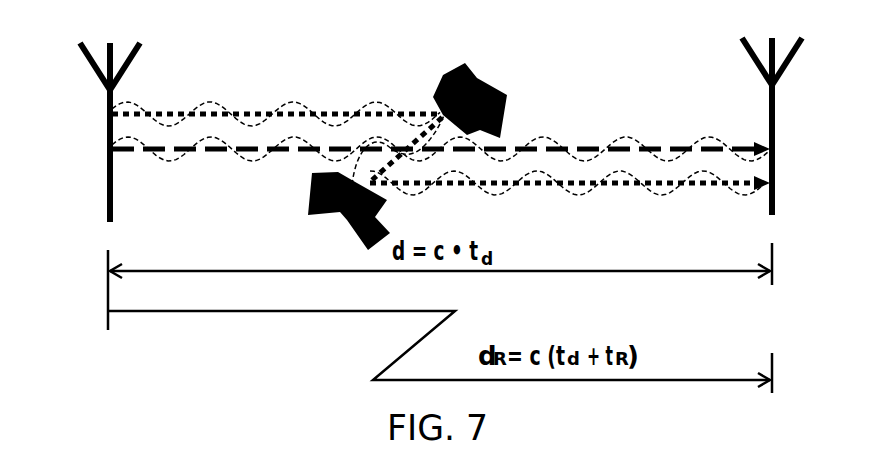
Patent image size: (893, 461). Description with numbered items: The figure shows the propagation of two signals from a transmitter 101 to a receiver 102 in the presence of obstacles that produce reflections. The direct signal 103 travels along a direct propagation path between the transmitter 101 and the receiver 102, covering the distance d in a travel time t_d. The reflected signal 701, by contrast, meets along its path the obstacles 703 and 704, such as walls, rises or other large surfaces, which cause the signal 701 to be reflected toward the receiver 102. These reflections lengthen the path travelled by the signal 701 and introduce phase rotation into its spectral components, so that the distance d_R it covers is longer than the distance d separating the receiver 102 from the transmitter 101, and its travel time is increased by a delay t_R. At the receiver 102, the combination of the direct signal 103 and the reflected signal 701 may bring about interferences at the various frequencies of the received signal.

The transmitter 101 is at (67, 101).
The receiver 102 is at (806, 99).
The direct signal 103 is at (647, 142).
The reflected signal 701 is at (534, 190).
The obstacle 703 is at (487, 78).
The obstacle 704 is at (292, 222).